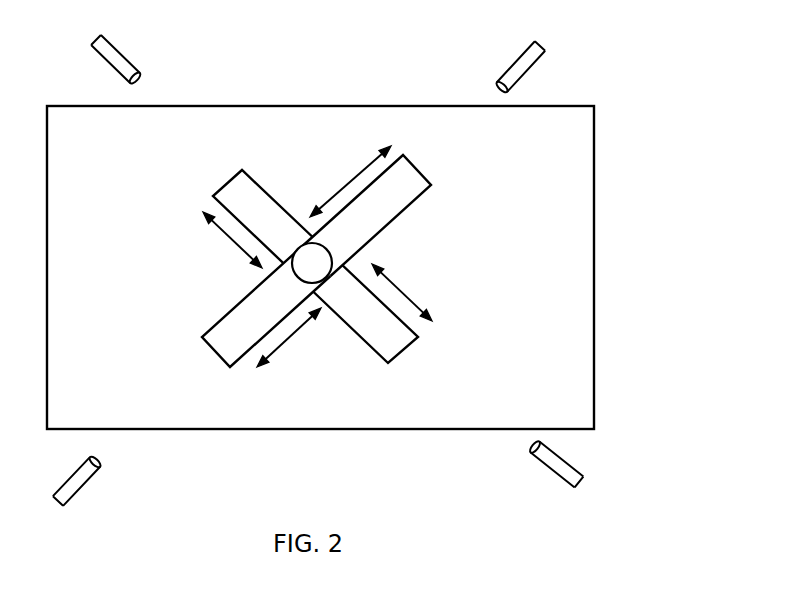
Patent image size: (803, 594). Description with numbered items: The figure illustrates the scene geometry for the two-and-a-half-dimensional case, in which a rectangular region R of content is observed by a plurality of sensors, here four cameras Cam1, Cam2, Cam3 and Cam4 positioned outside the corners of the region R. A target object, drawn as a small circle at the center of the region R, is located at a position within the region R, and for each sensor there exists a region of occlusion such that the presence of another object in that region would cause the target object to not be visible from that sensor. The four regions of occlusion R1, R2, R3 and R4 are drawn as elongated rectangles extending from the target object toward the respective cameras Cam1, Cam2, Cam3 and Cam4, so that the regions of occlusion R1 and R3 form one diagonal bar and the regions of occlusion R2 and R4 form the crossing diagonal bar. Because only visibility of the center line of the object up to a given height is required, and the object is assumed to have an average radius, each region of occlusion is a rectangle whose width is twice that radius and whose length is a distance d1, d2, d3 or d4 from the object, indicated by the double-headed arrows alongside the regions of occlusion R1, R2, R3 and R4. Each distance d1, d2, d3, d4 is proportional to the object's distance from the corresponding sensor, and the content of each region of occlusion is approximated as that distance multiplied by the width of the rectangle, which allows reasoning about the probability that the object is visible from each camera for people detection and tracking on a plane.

The region R is at (320, 267).
The region of occlusion for sensor 1 R1 is at (271, 225).
The region of occlusion for sensor 2 R2 is at (367, 215).
The region of occlusion for sensor 3 R3 is at (360, 309).
The region of occlusion for sensor 4 R4 is at (266, 306).
The distance of region of occlusion for sensor 1 d1 is at (225, 241).
The distance of region of occlusion for sensor 2 d2 is at (350, 181).
The distance of region of occlusion for sensor 3 d3 is at (405, 292).
The distance of region of occlusion for sensor 4 d4 is at (289, 339).
The camera 1 Cam1 is at (165, 60).
The camera 2 Cam2 is at (581, 67).
The camera 3 Cam3 is at (605, 470).
The camera 4 Cam4 is at (108, 487).